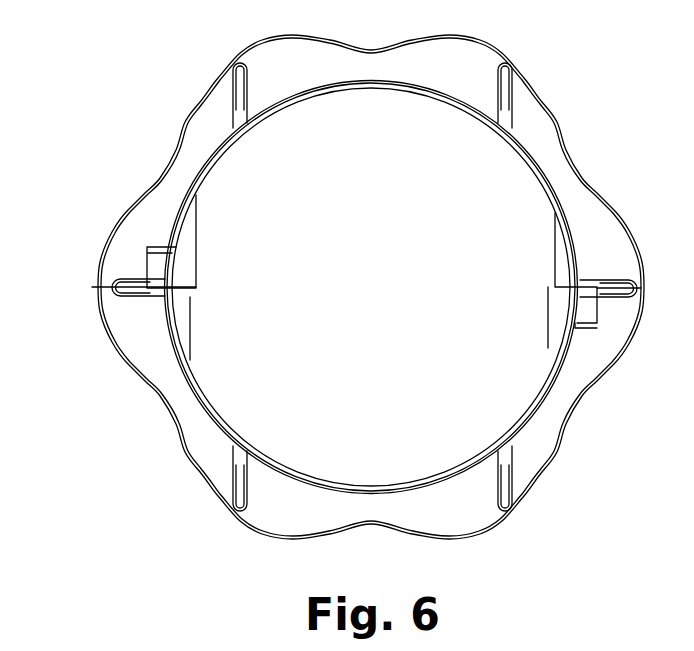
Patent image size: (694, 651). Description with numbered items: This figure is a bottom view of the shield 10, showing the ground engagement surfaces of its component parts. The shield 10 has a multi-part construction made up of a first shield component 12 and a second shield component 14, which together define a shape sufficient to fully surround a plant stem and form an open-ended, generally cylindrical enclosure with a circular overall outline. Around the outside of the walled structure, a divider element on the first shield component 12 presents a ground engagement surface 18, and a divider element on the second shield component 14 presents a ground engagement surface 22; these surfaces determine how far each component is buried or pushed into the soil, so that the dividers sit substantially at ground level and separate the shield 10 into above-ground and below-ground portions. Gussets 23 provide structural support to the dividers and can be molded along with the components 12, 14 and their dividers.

The shield 10 is at (88, 288).
The first shield component 12 is at (553, 405).
The second shield component 14 is at (560, 187).
The ground engagement surface 18 is at (608, 325).
The ground engagement surface 22 is at (216, 113).
The gussets 23 is at (233, 90).